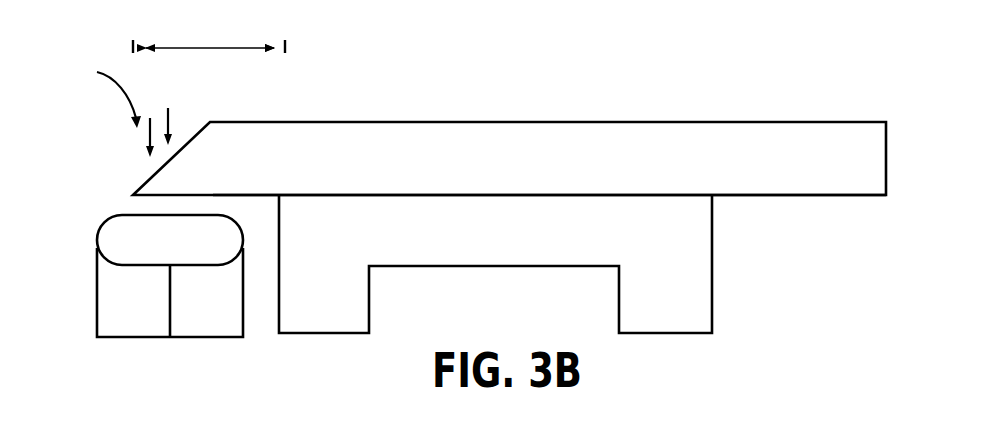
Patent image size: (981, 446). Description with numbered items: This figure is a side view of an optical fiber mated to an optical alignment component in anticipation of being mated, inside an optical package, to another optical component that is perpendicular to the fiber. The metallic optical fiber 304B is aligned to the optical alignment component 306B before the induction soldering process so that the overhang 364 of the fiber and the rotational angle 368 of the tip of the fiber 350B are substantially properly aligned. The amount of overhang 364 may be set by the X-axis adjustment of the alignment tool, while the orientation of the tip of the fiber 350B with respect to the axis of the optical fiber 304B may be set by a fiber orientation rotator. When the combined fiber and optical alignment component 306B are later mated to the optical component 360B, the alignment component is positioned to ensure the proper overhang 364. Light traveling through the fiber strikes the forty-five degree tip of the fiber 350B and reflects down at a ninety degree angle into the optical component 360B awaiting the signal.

The tip of the fiber 350B is at (232, 107).
The metallic optical fiber 304B is at (820, 200).
The optical alignment component 306B is at (727, 304).
The optical component 360B is at (194, 348).
The overhang 364 is at (209, 30).
The rotational angle 368 is at (127, 83).